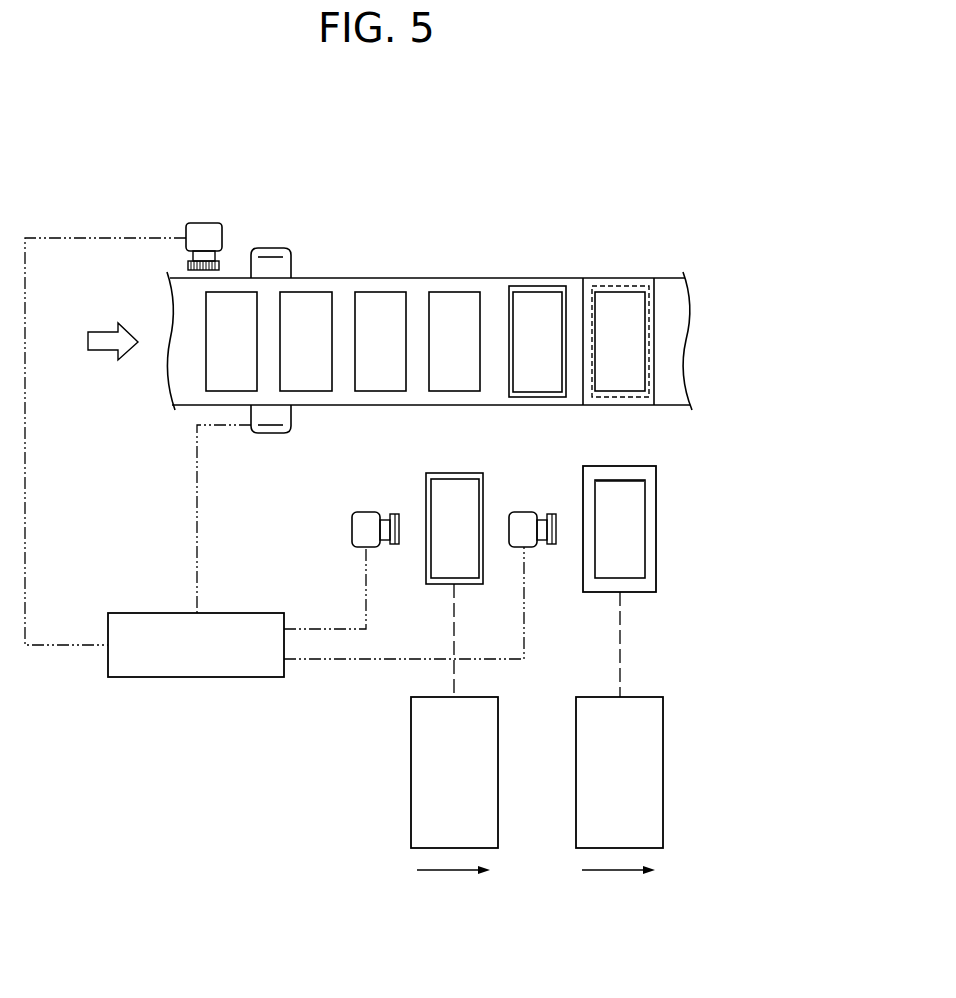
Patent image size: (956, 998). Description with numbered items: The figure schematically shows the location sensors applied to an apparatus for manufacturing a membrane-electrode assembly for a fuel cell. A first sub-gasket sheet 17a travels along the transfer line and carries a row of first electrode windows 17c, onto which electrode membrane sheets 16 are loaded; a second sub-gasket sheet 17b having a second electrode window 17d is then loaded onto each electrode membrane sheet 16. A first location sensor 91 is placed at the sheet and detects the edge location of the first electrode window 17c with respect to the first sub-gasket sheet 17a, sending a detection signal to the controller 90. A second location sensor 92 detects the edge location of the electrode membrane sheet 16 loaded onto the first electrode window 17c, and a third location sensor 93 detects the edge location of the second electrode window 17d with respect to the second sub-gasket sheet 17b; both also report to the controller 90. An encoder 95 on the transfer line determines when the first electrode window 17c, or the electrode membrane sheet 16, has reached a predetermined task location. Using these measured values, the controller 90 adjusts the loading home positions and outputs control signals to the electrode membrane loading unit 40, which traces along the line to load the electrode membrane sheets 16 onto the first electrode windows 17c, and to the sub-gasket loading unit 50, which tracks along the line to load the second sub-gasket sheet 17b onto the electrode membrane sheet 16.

The electrode membrane sheet 16 is at (535, 280).
The first sub-gasket sheet 17a is at (341, 288).
The second sub-gasket sheet 17b is at (620, 284).
The first electrode window 17c is at (231, 305).
The second electrode window 17d is at (633, 491).
The electrode membrane loading unit 40 is at (499, 773).
The sub-gasket loading unit 50 is at (664, 773).
The controller 90 is at (197, 678).
The first location sensor 91 is at (204, 222).
The second location sensor 92 is at (352, 530).
The third location sensor 93 is at (523, 512).
The encoder 95 is at (272, 248).